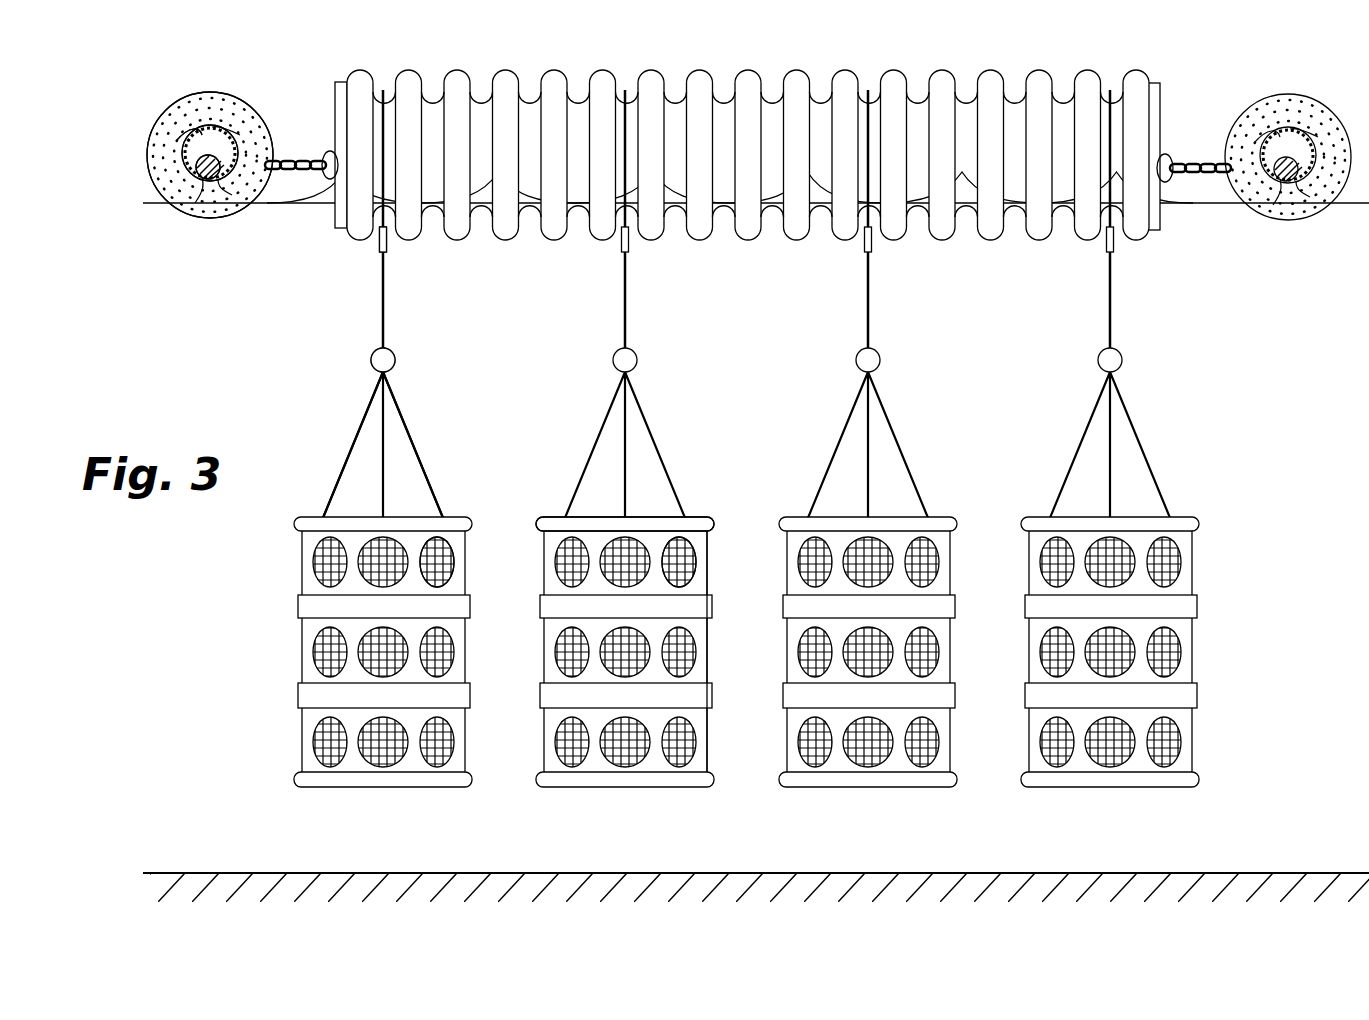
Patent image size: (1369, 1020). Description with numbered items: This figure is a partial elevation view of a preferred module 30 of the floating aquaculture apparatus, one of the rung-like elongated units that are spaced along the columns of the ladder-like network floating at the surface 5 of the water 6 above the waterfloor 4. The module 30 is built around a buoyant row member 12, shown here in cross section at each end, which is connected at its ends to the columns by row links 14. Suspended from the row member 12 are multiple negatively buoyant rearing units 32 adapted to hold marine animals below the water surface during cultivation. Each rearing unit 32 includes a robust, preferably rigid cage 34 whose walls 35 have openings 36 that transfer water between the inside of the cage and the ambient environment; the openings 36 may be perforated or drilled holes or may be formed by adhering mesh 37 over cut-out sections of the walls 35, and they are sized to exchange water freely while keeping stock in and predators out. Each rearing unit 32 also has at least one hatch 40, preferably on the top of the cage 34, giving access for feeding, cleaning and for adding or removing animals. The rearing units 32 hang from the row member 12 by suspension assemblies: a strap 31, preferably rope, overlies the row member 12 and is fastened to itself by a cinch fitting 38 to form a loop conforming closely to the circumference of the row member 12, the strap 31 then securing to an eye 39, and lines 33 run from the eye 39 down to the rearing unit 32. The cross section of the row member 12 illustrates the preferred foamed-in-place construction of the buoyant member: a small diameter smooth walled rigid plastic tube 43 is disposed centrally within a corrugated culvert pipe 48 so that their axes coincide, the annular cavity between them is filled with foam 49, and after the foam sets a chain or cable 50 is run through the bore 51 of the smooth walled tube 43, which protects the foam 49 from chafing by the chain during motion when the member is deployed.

The waterfloor 4 is at (1062, 873).
The surface 5 is at (1200, 203).
The water 6 is at (1006, 311).
The row member 12 is at (700, 239).
The row link 14 is at (302, 161).
The elongated module 30 is at (748, 71).
The strap 31 is at (390, 295).
The rearing unit 32 is at (470, 606).
The lines 33 is at (350, 448).
The cage 34 is at (698, 540).
The walls 35 is at (544, 638).
The openings 36 is at (455, 558).
The mesh 37 is at (691, 558).
The cinch fitting 38 is at (388, 241).
The eye 39 is at (396, 360).
The hatch 40 is at (698, 522).
The smooth walled rigid plastic tube 43 is at (245, 137).
The corrugated culvert pipe 48 is at (215, 95).
The foam 49 is at (152, 160).
The chain or cable 50 is at (185, 135).
The bore 51 is at (225, 126).